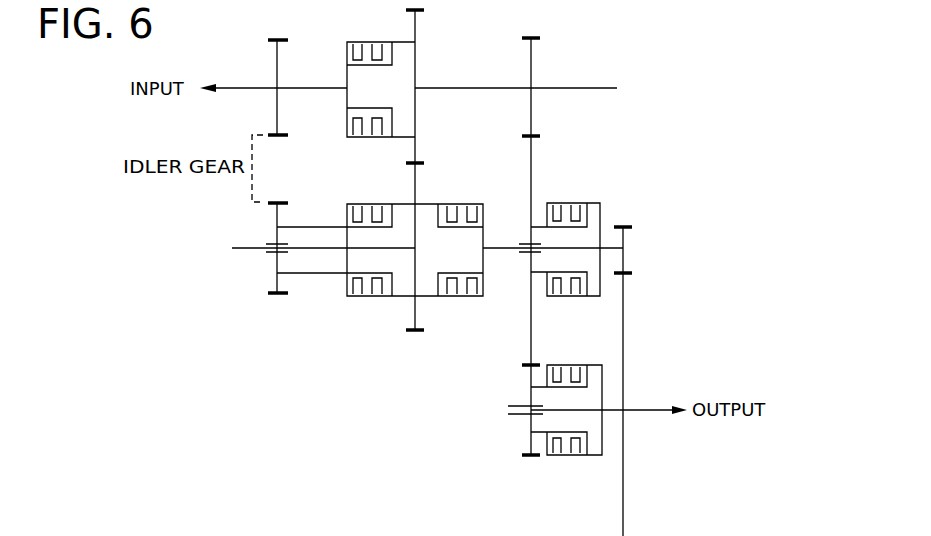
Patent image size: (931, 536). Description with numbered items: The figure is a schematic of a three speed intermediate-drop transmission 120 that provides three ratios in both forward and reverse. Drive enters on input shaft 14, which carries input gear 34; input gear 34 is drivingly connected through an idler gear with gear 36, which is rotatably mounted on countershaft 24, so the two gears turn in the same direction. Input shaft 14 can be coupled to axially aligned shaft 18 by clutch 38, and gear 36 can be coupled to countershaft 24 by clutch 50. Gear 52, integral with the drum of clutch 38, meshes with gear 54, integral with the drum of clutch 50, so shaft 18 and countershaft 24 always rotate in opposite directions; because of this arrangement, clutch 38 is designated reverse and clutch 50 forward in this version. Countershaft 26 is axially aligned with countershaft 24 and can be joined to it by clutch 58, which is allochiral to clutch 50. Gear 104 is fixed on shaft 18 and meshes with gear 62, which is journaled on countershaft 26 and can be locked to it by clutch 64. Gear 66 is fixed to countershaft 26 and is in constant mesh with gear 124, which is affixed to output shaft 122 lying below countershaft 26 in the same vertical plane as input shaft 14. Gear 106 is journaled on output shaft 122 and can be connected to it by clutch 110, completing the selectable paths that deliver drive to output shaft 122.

The input shaft 14 is at (301, 91).
The shaft 18 is at (590, 88).
The countershaft 24 is at (318, 252).
The countershaft 26 is at (507, 250).
The input gear 34 is at (276, 49).
The gear 36 is at (275, 219).
The clutch 38 is at (372, 36).
The clutch 50 is at (372, 198).
The gear 52 is at (419, 32).
The gear 54 is at (418, 175).
The clutch 58 is at (456, 197).
The gear 62 is at (538, 160).
The clutch 64 is at (572, 197).
The gear 66 is at (628, 238).
The gear 104 is at (532, 60).
The gear 106 is at (525, 374).
The clutch 110 is at (567, 361).
The transmission 120 is at (375, 354).
The output shaft 122 is at (645, 412).
The gear 124 is at (625, 340).